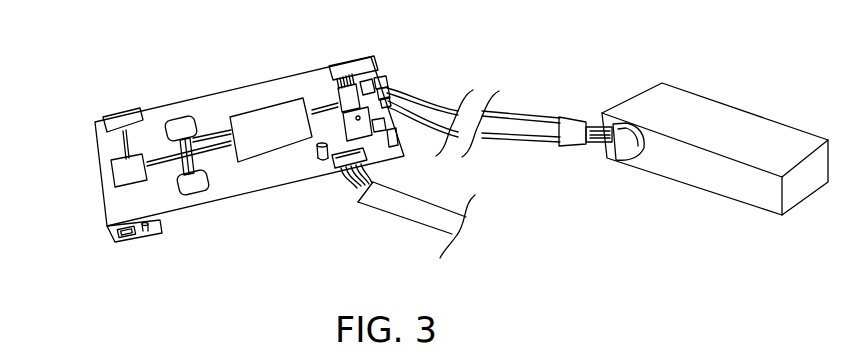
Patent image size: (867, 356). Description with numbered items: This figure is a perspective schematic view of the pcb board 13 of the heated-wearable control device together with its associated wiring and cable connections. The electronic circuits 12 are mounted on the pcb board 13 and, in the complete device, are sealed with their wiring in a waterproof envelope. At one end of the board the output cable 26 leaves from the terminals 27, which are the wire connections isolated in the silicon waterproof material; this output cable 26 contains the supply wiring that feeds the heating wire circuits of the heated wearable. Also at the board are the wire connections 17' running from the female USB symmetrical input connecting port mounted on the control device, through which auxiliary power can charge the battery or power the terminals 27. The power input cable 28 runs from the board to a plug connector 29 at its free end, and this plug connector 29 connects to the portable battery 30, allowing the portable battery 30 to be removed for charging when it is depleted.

The electronic circuits 12 is at (261, 122).
The pcb board 13 is at (213, 86).
The wire connections of the female USB symmetrical input connecting port 17' is at (396, 61).
The output cable 26 is at (433, 218).
The terminals 27 is at (371, 81).
The power input cable 28 is at (556, 122).
The plug connector 29 is at (629, 142).
The portable battery 30 is at (713, 180).